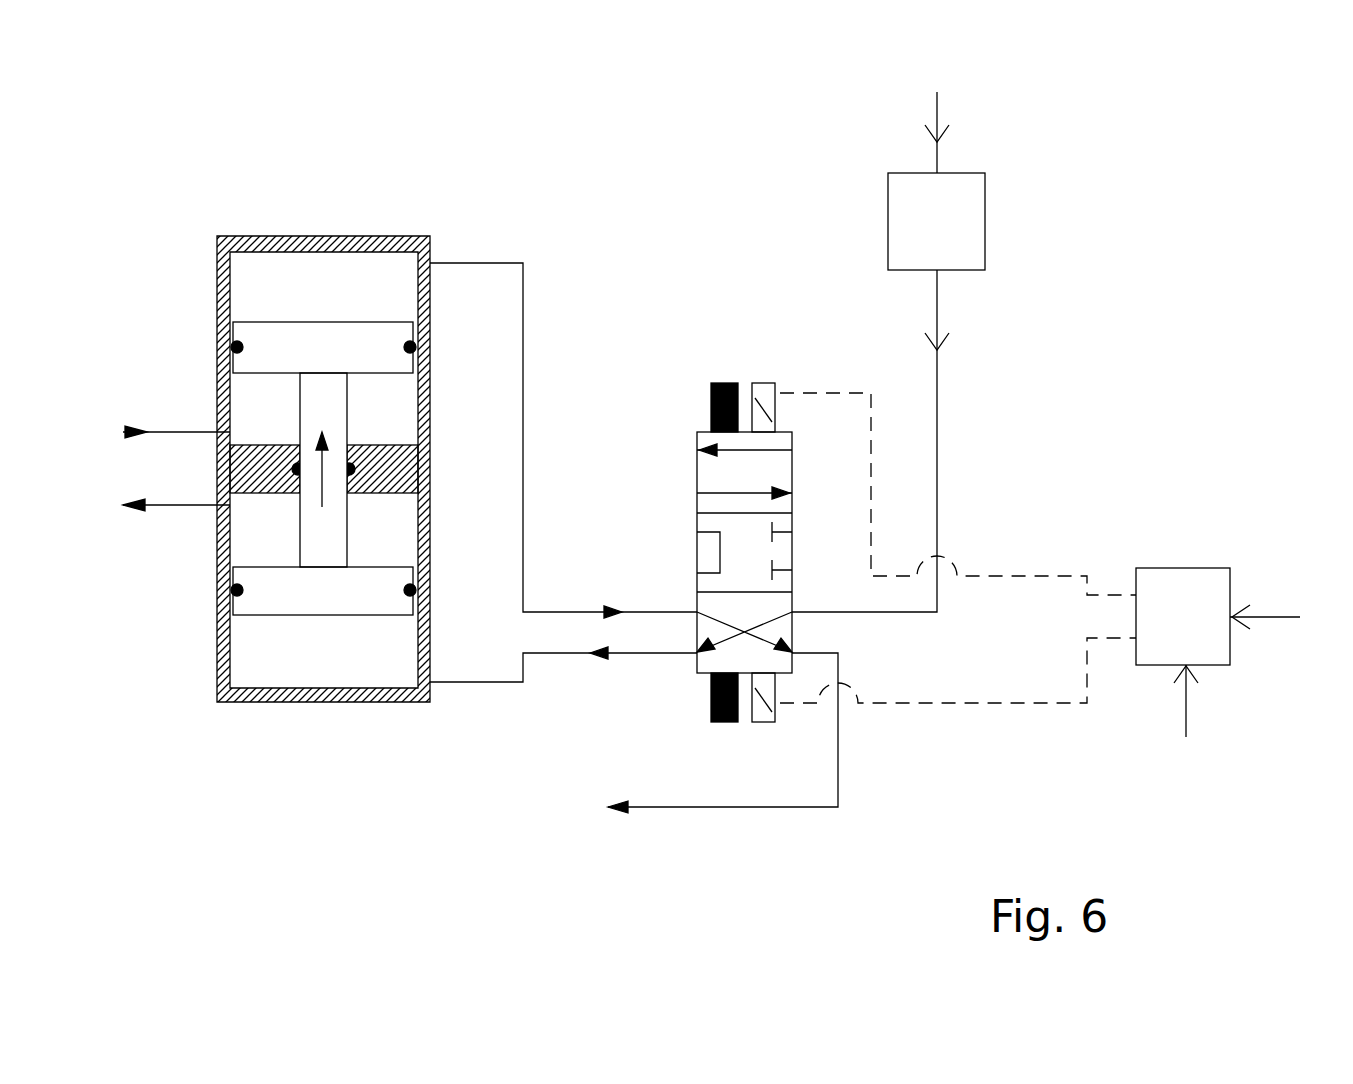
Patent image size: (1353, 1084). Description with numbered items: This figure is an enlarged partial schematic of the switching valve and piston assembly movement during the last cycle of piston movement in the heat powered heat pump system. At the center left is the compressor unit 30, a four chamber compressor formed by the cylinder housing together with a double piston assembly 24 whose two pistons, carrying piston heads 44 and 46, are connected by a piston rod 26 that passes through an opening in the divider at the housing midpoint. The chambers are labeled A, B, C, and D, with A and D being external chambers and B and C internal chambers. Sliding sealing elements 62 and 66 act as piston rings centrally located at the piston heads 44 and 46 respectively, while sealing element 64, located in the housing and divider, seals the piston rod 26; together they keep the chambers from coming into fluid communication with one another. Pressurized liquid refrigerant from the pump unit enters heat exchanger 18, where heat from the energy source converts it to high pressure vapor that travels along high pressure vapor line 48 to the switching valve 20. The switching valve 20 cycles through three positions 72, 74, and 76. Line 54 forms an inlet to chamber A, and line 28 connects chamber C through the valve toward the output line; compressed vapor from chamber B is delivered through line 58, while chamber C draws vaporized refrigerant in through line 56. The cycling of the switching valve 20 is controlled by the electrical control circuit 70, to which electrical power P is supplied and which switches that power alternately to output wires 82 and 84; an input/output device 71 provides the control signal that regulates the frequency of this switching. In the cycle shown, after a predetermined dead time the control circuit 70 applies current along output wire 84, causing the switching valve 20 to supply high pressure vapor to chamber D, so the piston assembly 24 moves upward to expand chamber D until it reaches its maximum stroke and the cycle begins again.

The compressor unit 30 is at (270, 203).
The double piston assembly 24 is at (345, 652).
The sealing element 64 is at (420, 447).
The piston rod 26 is at (320, 414).
The sealing element 62 is at (430, 325).
The piston head 44 is at (253, 340).
The sealing element 66 is at (430, 592).
The piston head 46 is at (262, 588).
The line 58 is at (190, 432).
The line 56 is at (198, 505).
The line 54 is at (523, 291).
The line 28 is at (464, 682).
The switching valve 20 is at (739, 345).
The position 72 is at (697, 470).
The position 74 is at (697, 557).
The position 76 is at (697, 660).
The heat exchanger 18 is at (985, 212).
The high pressure vapor line 48 is at (937, 408).
The output wire 82 is at (1040, 576).
The output wire 84 is at (978, 705).
The electrical control circuit 70 is at (1198, 568).
The input/output device 71 is at (1188, 718).